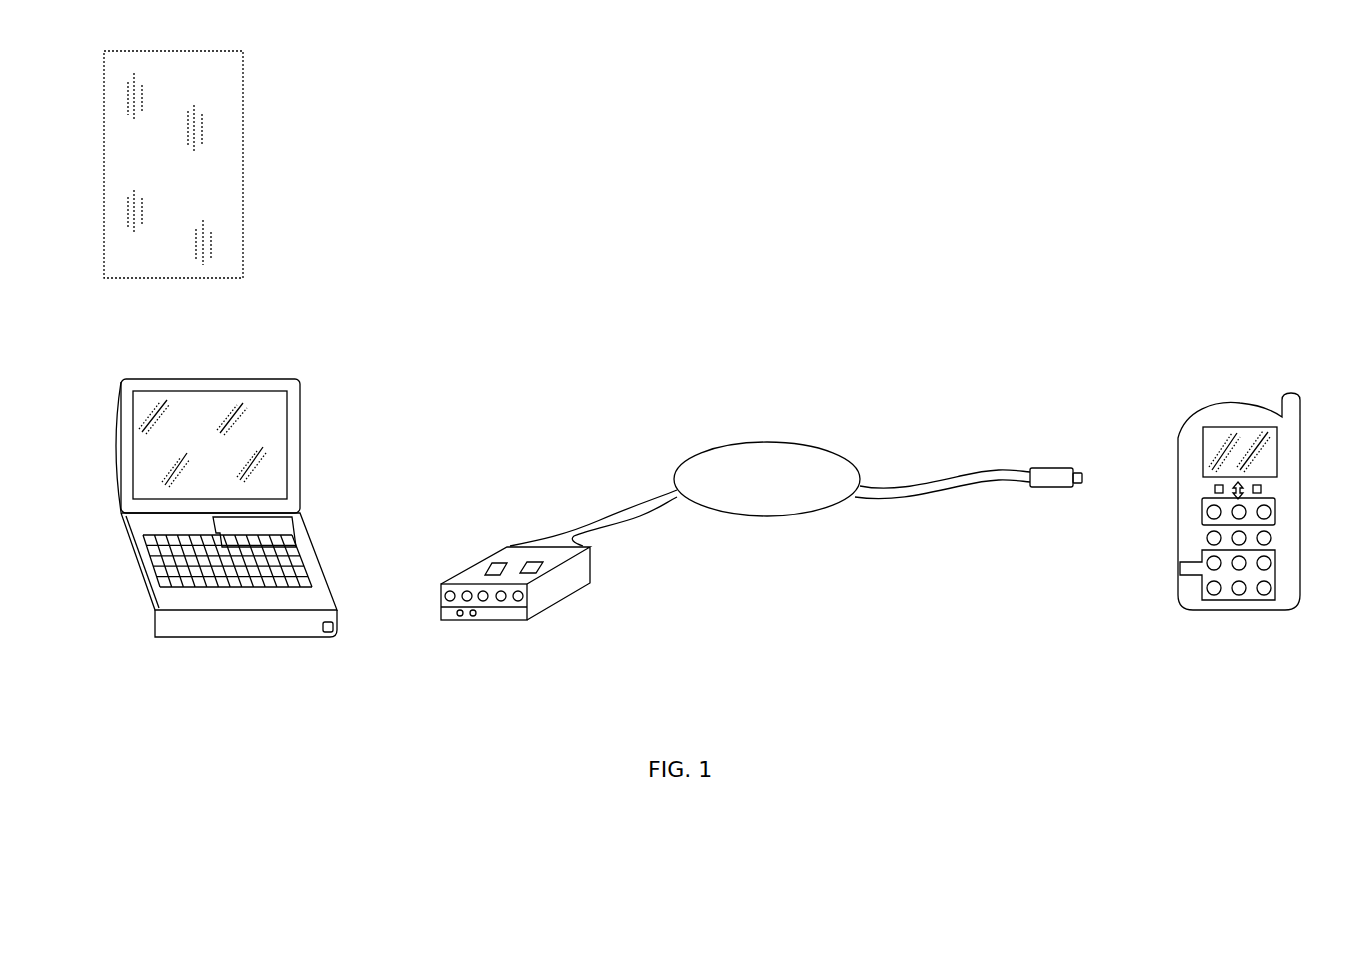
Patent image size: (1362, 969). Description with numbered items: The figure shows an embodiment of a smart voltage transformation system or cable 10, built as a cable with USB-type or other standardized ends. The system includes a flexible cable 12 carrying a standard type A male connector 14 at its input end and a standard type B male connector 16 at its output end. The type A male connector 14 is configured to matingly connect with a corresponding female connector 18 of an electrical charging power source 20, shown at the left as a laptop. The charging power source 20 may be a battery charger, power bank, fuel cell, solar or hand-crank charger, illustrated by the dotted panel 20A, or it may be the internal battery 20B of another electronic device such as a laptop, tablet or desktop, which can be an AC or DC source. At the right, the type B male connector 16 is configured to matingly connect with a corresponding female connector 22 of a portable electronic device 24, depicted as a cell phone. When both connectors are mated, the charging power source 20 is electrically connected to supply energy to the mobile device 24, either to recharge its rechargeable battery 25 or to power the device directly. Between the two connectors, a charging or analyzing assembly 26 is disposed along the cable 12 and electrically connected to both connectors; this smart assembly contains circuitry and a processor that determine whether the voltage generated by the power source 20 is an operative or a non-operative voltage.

The smart voltage transformation system or cable 10 is at (763, 266).
The flexible cable 12 is at (602, 503).
The standard type A male connector 14 is at (490, 557).
The standard type B male connector 16 is at (1045, 467).
The female connector 18 is at (333, 631).
The electrical charging power source 20 is at (351, 176).
The charging power source (charger) 20A is at (150, 279).
The internal battery of another electronic device 20B is at (290, 522).
The female connector 22 is at (1183, 569).
The portable electronic device 24 is at (1242, 527).
The rechargeable battery 25 is at (1262, 596).
The charging or analyzing assembly 26 is at (763, 441).